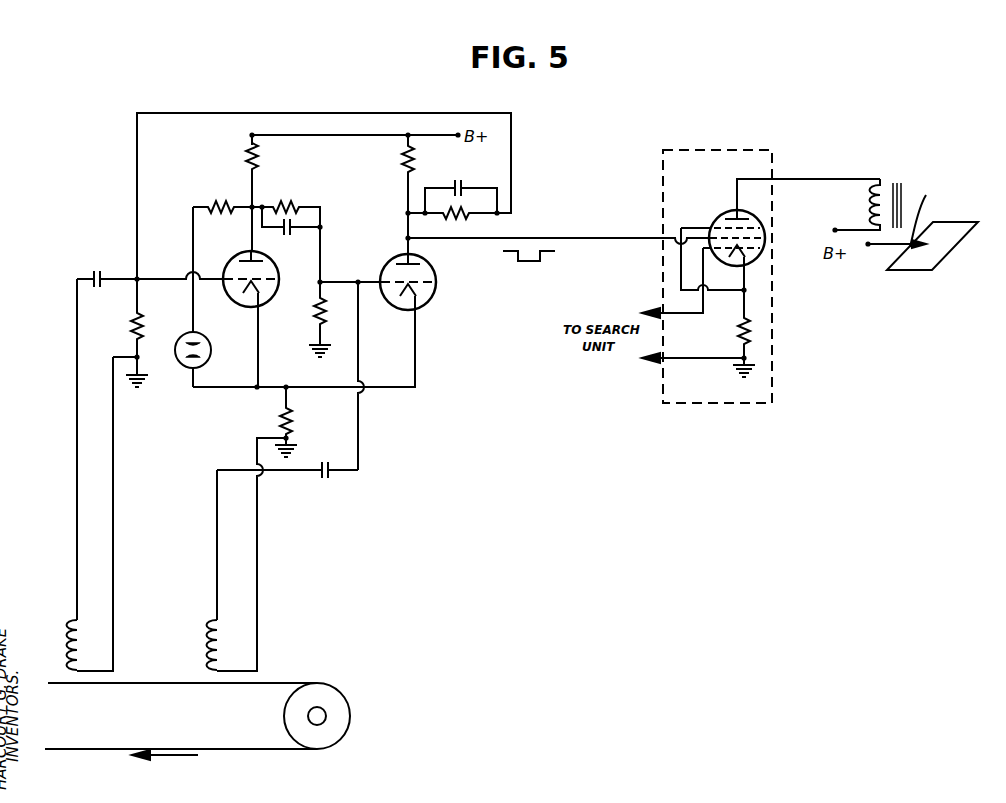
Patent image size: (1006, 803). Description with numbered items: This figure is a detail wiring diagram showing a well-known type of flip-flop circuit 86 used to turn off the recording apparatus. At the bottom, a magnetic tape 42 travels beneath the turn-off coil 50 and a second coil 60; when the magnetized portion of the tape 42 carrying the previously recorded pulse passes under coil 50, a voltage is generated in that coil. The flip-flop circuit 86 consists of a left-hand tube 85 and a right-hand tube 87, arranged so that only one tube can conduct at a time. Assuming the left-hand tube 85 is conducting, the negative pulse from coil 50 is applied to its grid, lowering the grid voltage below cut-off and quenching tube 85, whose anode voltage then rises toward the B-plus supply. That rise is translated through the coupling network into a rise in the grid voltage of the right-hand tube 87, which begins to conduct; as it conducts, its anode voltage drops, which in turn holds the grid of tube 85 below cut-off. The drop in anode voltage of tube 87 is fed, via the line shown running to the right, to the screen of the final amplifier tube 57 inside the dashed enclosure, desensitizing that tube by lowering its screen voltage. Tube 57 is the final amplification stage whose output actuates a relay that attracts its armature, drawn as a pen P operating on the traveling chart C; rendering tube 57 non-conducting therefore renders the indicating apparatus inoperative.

The tape 42 is at (148, 684).
The first turn-off coil 50 is at (71, 623).
The final amplifier tube 57 is at (759, 224).
The coil 60 is at (212, 623).
The left-hand tube 85 is at (235, 266).
The flip-flop circuit 86 is at (397, 389).
The right-hand tube 87 is at (429, 274).
The pen P is at (925, 218).
The traveling chart C is at (958, 230).